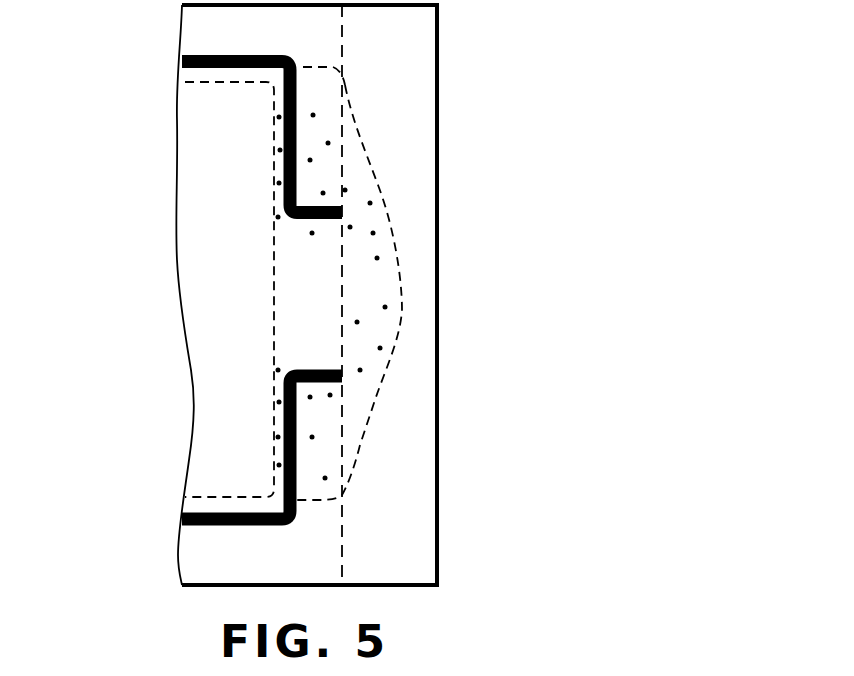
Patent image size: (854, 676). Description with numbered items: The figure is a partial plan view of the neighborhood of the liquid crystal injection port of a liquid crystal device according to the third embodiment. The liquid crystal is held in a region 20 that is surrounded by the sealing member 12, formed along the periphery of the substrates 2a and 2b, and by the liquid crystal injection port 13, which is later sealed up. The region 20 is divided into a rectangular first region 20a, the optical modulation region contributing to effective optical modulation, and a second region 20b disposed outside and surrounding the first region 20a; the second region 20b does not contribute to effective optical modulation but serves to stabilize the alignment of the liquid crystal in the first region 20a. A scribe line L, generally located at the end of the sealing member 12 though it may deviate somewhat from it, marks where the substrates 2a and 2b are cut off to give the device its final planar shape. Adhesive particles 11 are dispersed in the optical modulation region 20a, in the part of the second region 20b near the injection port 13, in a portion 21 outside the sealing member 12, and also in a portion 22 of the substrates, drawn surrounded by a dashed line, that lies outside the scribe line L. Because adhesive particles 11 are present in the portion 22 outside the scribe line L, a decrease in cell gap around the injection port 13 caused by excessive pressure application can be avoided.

The substrate 2a is at (245, 298).
The substrate 2b is at (207, 587).
The adhesive particles 11 is at (279, 117).
The sealing member 12 is at (205, 55).
The liquid crystal injection port 13 is at (300, 310).
The region 20 is at (190, 287).
The first region 20a is at (195, 106).
The second region 20b is at (195, 72).
The portion outside the sealing member 21 is at (328, 97).
The portion outside the scribe line 22 is at (385, 242).
The scribe line L is at (342, 40).